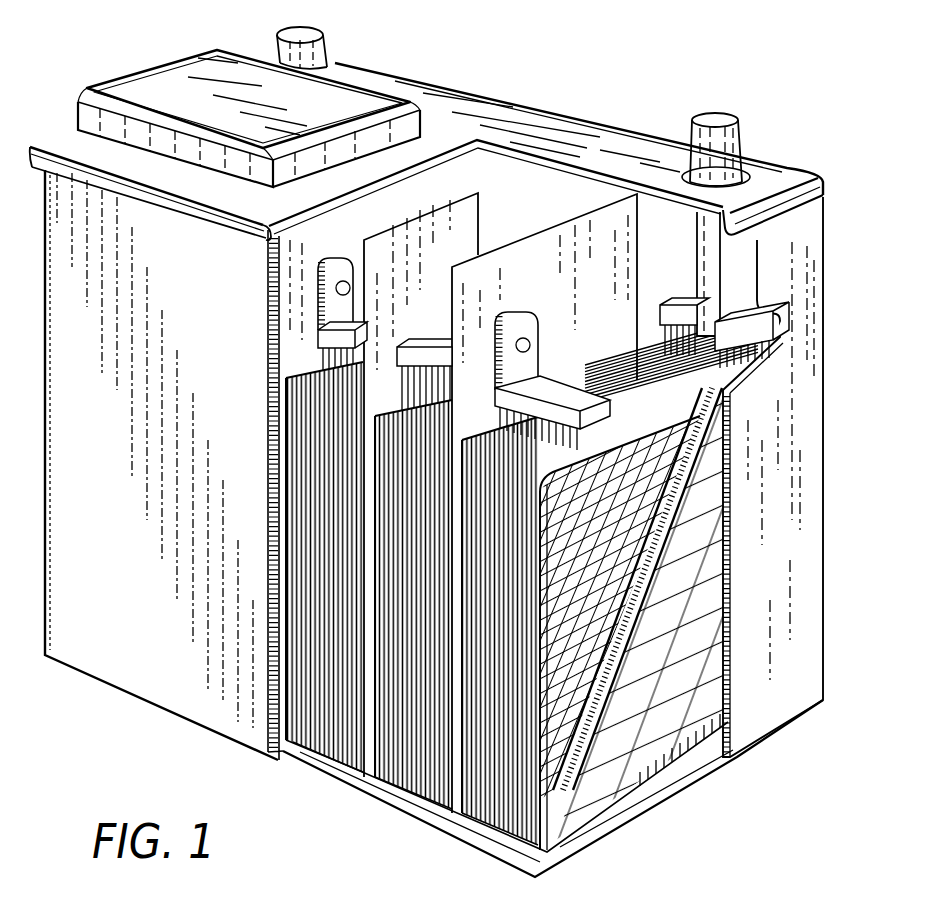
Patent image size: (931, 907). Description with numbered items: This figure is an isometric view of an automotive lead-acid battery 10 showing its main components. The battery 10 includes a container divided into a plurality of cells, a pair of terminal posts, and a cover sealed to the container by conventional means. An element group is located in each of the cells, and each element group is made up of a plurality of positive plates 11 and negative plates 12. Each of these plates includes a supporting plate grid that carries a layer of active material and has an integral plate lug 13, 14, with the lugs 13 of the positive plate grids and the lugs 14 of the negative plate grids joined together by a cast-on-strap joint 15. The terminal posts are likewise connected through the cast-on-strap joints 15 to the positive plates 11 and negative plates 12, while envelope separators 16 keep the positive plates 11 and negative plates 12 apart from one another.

The lead-acid battery 10 is at (505, 97).
The positive plates 11 is at (675, 425).
The negative plates 12 is at (715, 693).
The plate lug 13 is at (782, 347).
The plate lug 14 is at (670, 465).
The cast-on-strap joint 15 is at (785, 303).
The envelope separators 16 is at (602, 623).